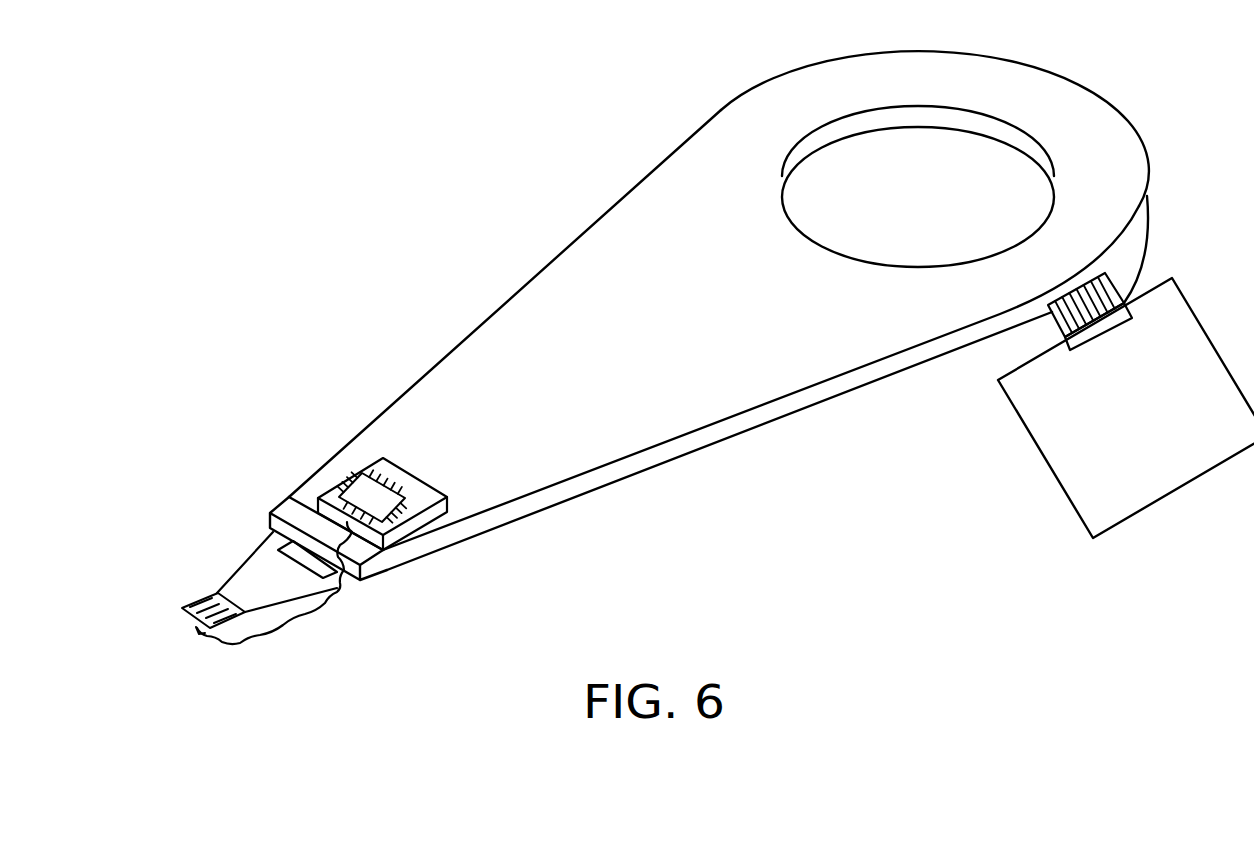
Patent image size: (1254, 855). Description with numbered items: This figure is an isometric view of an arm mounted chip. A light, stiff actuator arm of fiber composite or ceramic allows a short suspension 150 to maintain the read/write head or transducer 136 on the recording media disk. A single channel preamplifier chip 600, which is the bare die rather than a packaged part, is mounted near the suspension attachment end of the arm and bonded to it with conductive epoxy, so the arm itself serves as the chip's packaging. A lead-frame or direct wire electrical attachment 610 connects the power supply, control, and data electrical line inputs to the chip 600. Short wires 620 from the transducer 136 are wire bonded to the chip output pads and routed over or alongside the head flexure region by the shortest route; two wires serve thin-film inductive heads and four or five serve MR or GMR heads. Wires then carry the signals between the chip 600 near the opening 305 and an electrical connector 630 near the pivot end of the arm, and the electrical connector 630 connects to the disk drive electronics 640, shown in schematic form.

The read/write head or transducer 136 is at (185, 608).
The suspension 150 is at (253, 573).
The opening 305 is at (810, 148).
The preamplifier chip 600 is at (370, 492).
The lead-frame or direct wire electrical attachment 610 is at (443, 499).
The wires 620 is at (305, 615).
The electrical connector 630 is at (1122, 274).
The disk drive electronics 640 is at (1075, 488).